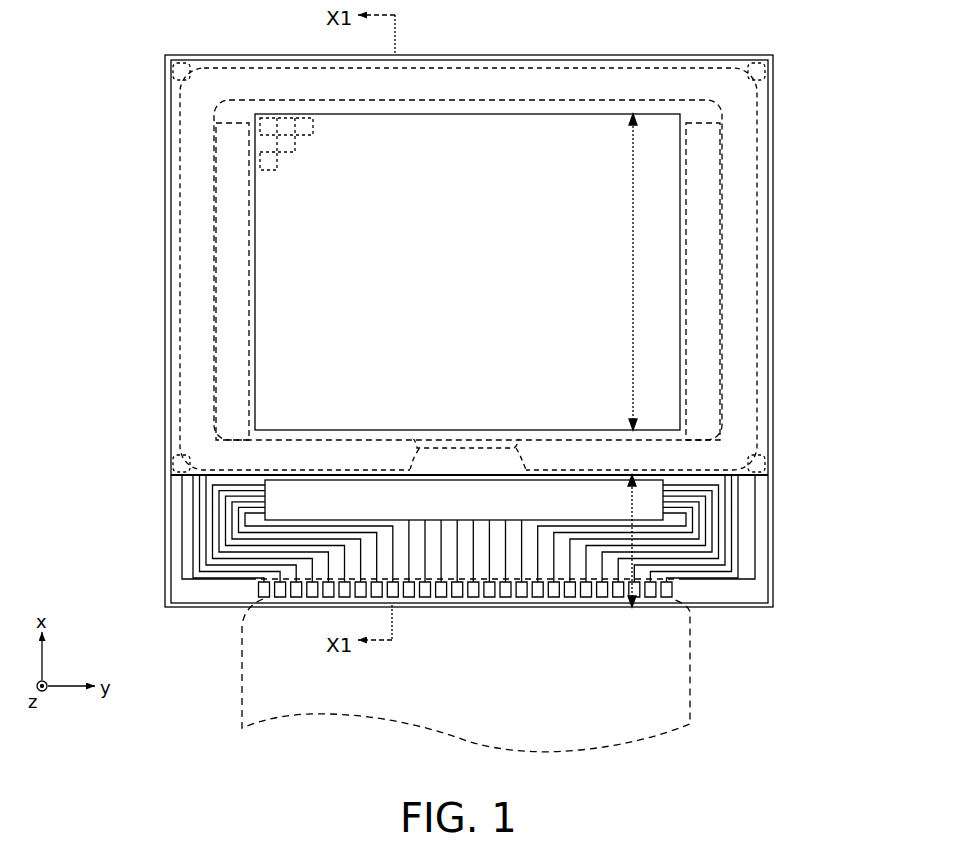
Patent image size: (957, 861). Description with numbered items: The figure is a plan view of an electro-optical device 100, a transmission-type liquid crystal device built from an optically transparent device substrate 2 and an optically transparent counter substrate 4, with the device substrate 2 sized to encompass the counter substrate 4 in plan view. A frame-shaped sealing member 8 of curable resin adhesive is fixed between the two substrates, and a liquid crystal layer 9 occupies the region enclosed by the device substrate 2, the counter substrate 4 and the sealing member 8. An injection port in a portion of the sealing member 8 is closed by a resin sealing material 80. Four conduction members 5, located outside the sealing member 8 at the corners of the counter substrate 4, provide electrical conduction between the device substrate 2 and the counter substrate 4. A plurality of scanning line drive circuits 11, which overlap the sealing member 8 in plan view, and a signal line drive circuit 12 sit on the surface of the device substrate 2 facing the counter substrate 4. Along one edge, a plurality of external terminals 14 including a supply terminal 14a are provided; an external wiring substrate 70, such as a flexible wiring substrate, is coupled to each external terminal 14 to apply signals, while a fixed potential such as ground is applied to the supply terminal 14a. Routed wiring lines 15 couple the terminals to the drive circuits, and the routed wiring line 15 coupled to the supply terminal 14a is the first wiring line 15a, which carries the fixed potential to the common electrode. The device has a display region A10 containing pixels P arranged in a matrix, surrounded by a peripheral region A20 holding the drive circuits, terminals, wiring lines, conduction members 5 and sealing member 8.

The electro-optical device 100 is at (812, 25).
The device substrate 2 is at (774, 600).
The counter substrate 4 is at (770, 400).
The conduction member 5 is at (172, 70).
The sealing member 8 is at (553, 88).
The liquid crystal layer 9 is at (462, 180).
The scanning line drive circuit 11 is at (226, 345).
The signal line drive circuit 12 is at (285, 505).
The external terminal 14 is at (292, 600).
The supply terminal 14a is at (262, 582).
The routed wiring line 15 is at (712, 505).
The first wiring line 15a is at (183, 520).
The external wiring substrate 70 is at (690, 690).
The sealing material 80 is at (455, 444).
The pixel P is at (307, 128).
The display region A10 is at (631, 272).
The peripheral region A20 is at (627, 541).